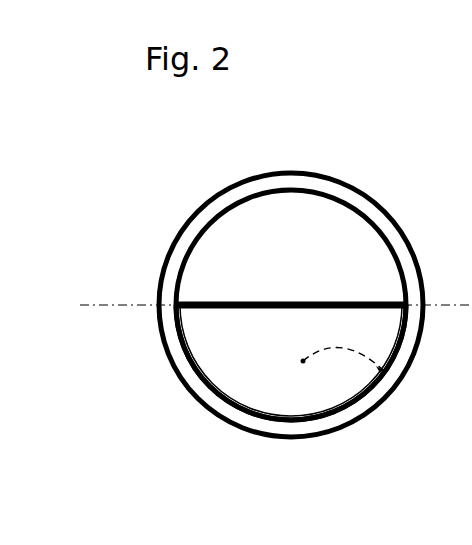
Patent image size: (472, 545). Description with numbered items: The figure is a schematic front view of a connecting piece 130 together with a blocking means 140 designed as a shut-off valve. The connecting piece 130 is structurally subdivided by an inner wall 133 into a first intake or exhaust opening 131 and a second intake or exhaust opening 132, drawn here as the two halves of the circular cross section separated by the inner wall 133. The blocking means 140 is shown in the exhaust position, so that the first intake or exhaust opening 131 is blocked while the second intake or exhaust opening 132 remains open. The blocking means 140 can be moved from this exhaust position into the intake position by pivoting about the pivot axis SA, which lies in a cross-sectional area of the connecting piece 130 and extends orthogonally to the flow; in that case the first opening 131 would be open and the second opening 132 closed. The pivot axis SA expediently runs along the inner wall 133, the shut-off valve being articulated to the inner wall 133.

The connecting piece 130 is at (339, 180).
The first intake or exhaust opening 131 is at (388, 390).
The second intake or exhaust opening 132 is at (305, 263).
The inner wall 133 is at (168, 296).
The blocking means 140 is at (206, 394).
The pivot axis SA is at (257, 307).